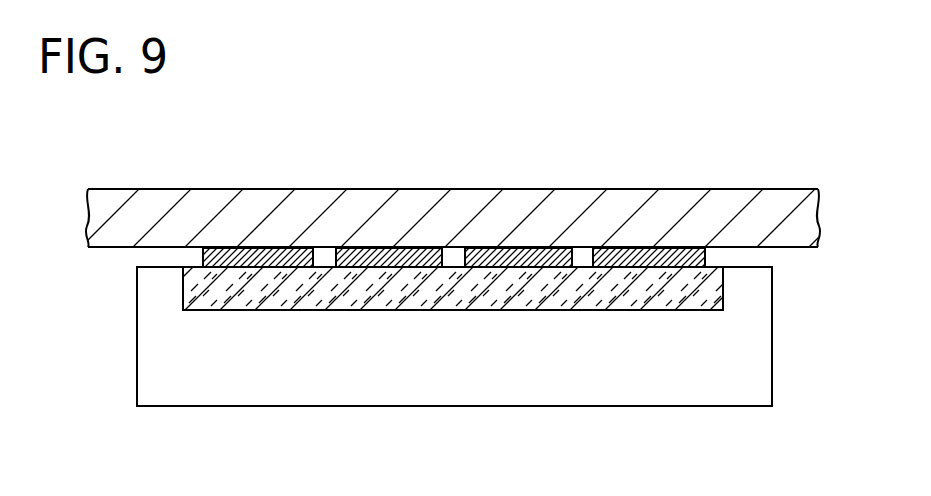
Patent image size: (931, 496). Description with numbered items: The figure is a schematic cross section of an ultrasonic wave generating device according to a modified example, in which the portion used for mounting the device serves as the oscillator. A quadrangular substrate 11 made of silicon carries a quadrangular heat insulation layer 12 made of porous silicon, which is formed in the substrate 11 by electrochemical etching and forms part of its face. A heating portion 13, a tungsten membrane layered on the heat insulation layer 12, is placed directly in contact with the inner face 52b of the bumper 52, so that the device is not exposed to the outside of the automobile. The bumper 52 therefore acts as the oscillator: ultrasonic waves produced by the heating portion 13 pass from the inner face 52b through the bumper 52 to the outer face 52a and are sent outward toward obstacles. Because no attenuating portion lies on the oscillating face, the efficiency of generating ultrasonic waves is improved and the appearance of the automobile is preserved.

The substrate 11 is at (763, 357).
The heat insulation layer 12 is at (640, 283).
The heating portion 13 is at (359, 248).
The bumper 52 is at (530, 205).
The outer face 52a is at (695, 190).
The inner face 52b is at (113, 248).